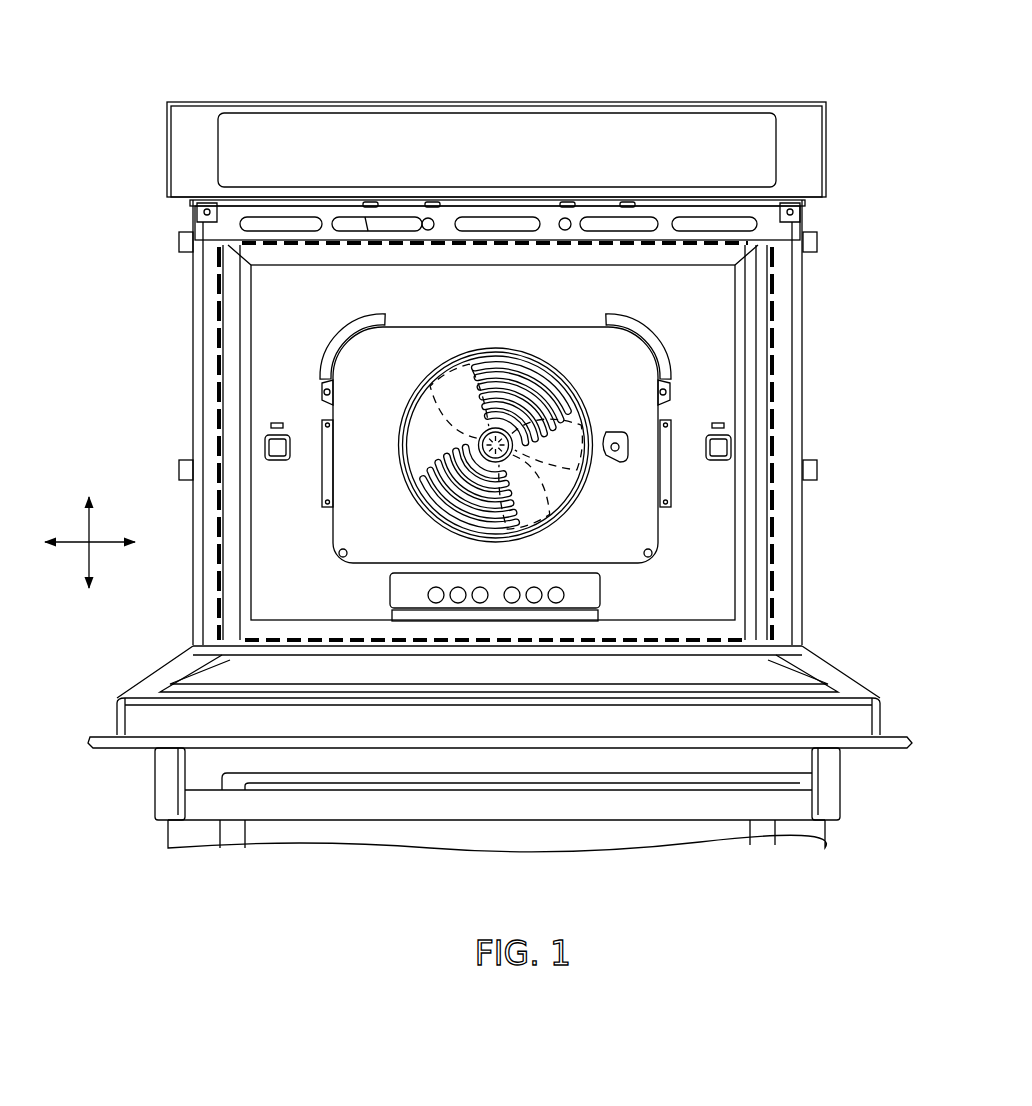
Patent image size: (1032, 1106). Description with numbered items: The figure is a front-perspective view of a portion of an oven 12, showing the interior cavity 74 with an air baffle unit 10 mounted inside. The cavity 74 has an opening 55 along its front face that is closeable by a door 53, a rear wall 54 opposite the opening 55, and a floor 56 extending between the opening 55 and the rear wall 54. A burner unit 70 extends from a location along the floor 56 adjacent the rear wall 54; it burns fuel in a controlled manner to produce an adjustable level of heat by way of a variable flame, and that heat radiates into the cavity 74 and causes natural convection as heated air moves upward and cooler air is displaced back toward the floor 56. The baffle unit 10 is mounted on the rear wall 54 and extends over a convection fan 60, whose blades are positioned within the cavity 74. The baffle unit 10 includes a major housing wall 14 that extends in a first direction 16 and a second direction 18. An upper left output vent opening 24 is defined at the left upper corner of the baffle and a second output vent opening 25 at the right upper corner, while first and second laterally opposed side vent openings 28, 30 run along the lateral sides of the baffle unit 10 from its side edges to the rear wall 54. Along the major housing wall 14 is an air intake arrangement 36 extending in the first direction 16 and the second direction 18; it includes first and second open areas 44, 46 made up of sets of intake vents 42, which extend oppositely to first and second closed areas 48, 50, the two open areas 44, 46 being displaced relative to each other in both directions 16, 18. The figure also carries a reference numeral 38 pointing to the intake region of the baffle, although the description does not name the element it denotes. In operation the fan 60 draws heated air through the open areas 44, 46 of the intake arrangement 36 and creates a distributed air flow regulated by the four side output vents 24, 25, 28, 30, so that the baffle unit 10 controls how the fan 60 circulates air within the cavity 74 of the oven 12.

The air baffle unit 10 is at (625, 355).
The oven 12 is at (798, 70).
The major housing wall 14 is at (395, 358).
The first direction 16 is at (107, 545).
The second direction 18 is at (90, 523).
The upper left output vent opening 24 is at (332, 333).
The second output vent opening 25 is at (662, 332).
The first side vent opening 28 is at (318, 452).
The second side vent opening 30 is at (673, 468).
The air intake arrangement 36 is at (600, 492).
The upper slot group 38 is at (540, 377).
The intake vents 42 is at (468, 447).
The first open area 44 is at (580, 412).
The second open area 46 is at (416, 481).
The first closed area 48 is at (432, 408).
The second closed area 50 is at (534, 508).
The door 53 is at (152, 728).
The rear wall 54 is at (510, 290).
The opening 55 is at (778, 540).
The floor 56 is at (685, 638).
The fan 60 is at (446, 532).
The burner unit 70 is at (395, 598).
The interior cavity 74 is at (358, 290).